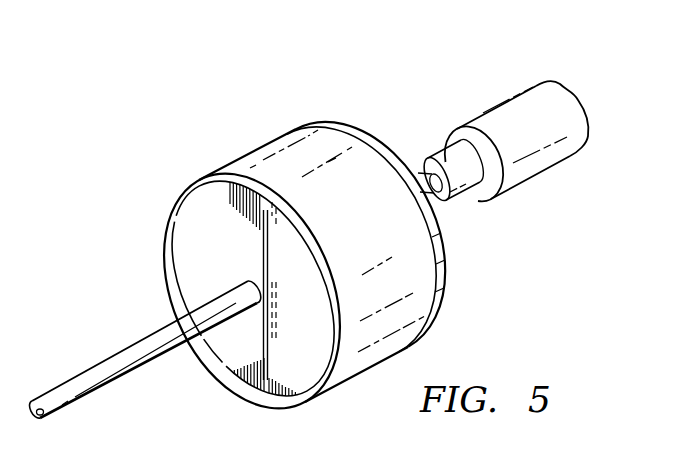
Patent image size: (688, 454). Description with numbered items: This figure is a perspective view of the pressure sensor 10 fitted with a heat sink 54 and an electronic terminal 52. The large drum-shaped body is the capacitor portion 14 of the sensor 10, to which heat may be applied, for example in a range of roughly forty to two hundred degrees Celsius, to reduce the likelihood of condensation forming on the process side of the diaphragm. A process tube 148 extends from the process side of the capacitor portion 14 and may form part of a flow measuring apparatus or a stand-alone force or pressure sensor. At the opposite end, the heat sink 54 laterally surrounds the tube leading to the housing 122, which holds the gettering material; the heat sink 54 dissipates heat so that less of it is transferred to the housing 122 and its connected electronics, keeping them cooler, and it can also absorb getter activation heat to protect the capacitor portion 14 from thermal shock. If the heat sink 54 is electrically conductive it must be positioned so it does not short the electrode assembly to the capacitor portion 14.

The pressure sensor 10 is at (198, 149).
The capacitor portion 14 is at (267, 143).
The heat sink 54 is at (385, 150).
The electronic terminal 52 is at (508, 112).
The housing 122 is at (469, 177).
The process tube 148 is at (102, 365).